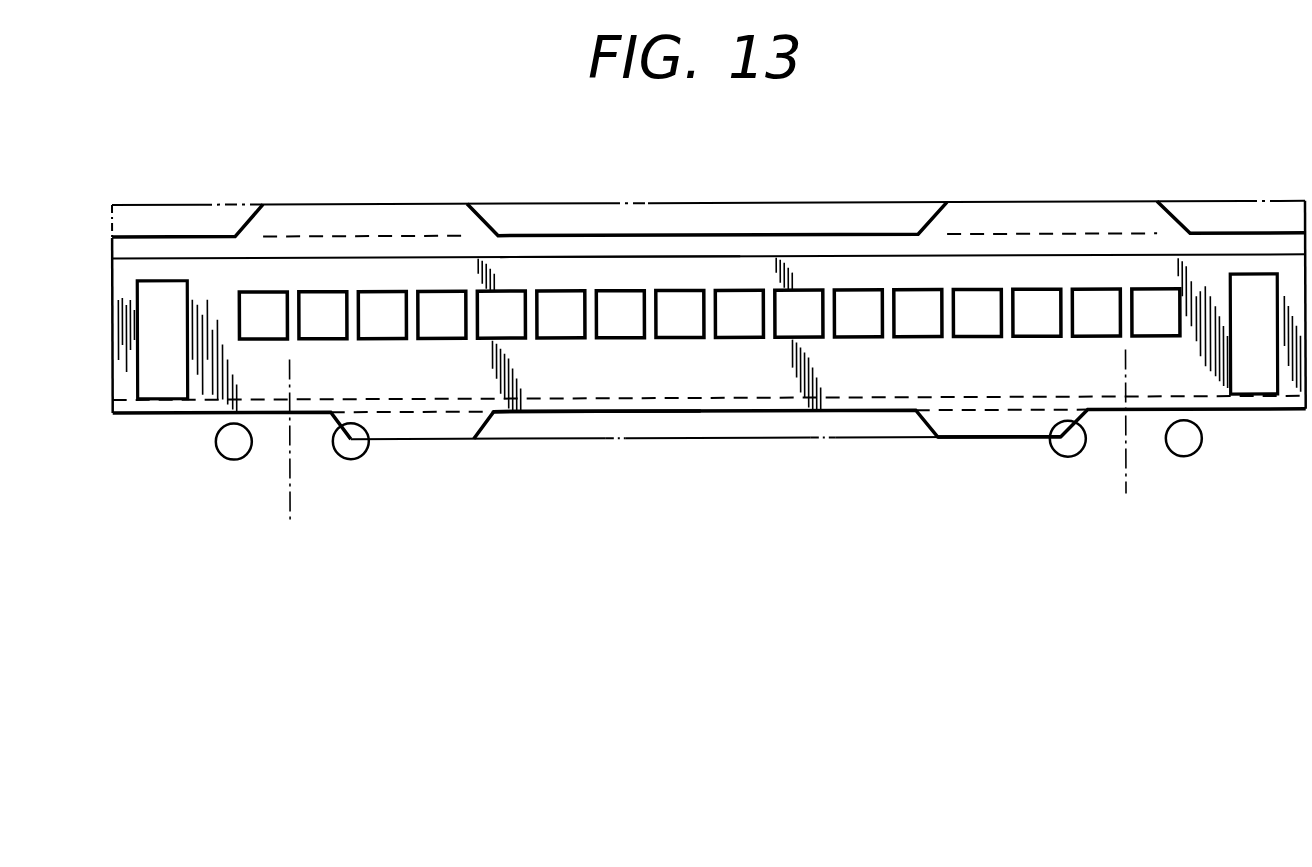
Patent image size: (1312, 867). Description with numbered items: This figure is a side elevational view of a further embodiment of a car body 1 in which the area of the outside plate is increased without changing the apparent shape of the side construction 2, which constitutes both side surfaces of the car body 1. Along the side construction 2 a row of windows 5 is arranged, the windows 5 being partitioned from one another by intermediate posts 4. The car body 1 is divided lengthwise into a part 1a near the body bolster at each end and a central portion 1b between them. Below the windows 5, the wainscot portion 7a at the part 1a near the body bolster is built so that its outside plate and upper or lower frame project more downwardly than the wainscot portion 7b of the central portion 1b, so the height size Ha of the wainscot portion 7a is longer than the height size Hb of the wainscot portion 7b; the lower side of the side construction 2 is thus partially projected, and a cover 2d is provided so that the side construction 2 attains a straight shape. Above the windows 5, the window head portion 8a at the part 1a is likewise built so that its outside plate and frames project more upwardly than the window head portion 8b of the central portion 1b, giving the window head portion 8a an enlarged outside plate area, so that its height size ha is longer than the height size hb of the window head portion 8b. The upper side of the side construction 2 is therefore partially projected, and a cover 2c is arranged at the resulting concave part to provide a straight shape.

The car body 1 is at (145, 203).
The part near the body bolster 1a is at (545, 383).
The central portion 1b is at (617, 274).
The side construction 2 is at (192, 268).
The cover 2c is at (740, 203).
The cover 2d is at (765, 443).
The intermediate post 4 is at (345, 318).
The window 5 is at (322, 300).
The wainscot portion 7a is at (408, 381).
The wainscot portion 7b is at (858, 378).
The window head portion 8a is at (378, 280).
The window head portion 8b is at (877, 265).
The height size of the window head portion 8b hb is at (690, 239).
The height size of the wainscot portion 7b Hb is at (690, 341).
The height size of the window head portion 8a ha is at (1040, 207).
The height size of the wainscot portion 7a Ha is at (1040, 438).